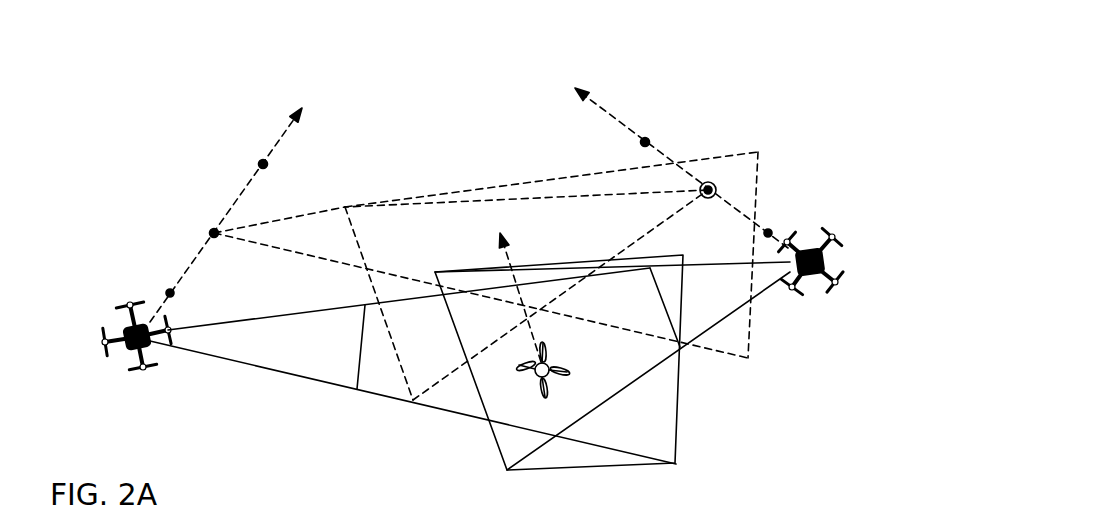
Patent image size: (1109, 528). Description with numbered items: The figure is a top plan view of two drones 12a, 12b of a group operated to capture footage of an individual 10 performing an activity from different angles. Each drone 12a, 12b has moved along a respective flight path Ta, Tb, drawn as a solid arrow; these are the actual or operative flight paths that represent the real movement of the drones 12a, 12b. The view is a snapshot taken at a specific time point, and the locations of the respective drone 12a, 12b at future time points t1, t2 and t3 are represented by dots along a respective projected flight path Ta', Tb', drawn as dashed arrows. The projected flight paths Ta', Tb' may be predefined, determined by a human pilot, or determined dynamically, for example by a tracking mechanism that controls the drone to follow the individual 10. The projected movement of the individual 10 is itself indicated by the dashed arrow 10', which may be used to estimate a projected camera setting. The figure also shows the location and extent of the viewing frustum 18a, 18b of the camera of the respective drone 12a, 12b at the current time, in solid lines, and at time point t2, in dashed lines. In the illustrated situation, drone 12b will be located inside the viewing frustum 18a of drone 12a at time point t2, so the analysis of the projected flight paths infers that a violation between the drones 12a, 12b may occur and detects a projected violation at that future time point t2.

The individual 10 is at (566, 370).
The projected movement of the object 10' is at (527, 287).
The drone 12a is at (146, 369).
The drone 12b is at (812, 276).
The viewing frustum 18a is at (495, 190).
The viewing frustum 18b is at (550, 197).
The flight path Ta is at (169, 267).
The projected flight path Ta' is at (260, 109).
The flight path Tb is at (757, 222).
The projected flight path Tb' is at (620, 86).
The time point t1 is at (168, 292).
The time point t2 is at (212, 232).
The time point t3 is at (262, 163).